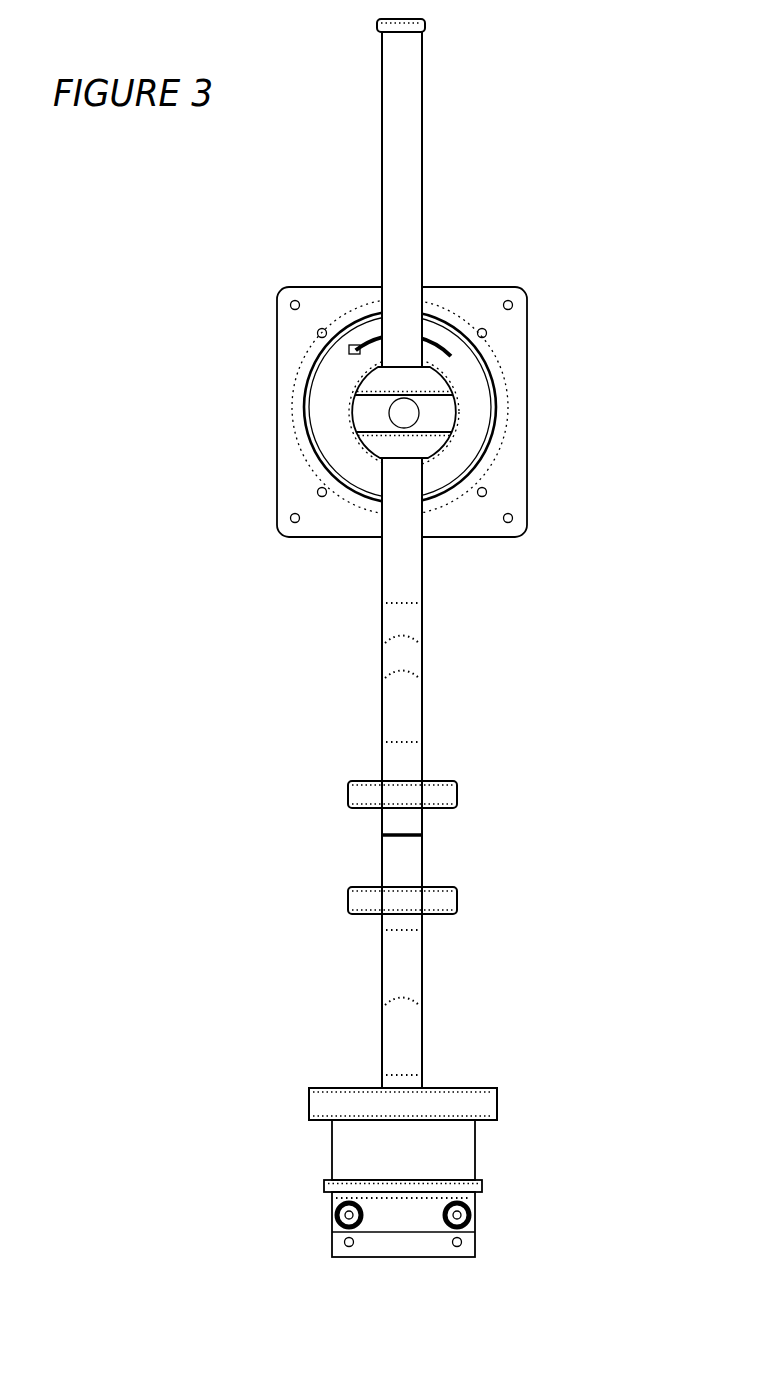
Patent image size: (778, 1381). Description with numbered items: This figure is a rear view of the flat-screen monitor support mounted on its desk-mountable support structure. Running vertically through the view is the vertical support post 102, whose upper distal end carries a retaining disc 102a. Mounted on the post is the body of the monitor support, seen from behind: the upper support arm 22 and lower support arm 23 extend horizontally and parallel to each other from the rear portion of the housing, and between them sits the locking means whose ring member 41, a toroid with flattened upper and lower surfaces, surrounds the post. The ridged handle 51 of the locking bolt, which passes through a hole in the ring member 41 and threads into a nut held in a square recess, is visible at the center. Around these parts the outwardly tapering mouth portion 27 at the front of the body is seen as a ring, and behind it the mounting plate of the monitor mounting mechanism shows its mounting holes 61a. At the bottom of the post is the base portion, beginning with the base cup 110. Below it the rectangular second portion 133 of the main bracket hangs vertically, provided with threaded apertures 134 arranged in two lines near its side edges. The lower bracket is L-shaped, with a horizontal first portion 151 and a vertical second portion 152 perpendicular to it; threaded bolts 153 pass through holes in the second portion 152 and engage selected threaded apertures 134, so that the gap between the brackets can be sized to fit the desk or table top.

The vertical support post 102 is at (417, 80).
The retaining disc 102a is at (427, 27).
The mounting holes 61a is at (487, 488).
The mouth portion 27 is at (470, 375).
The upper support arm 22 is at (390, 383).
The ring member 41 is at (358, 414).
The lower support arm 23 is at (377, 443).
The ridged handle 51 is at (406, 416).
The base cup 110 is at (480, 1103).
The second portion of main bracket 133 is at (352, 1149).
The first portion of lower bracket 151 is at (478, 1188).
The second portion of lower bracket 152 is at (392, 1213).
The threaded bolts 153 is at (338, 1213).
The threaded apertures 134 is at (349, 1247).